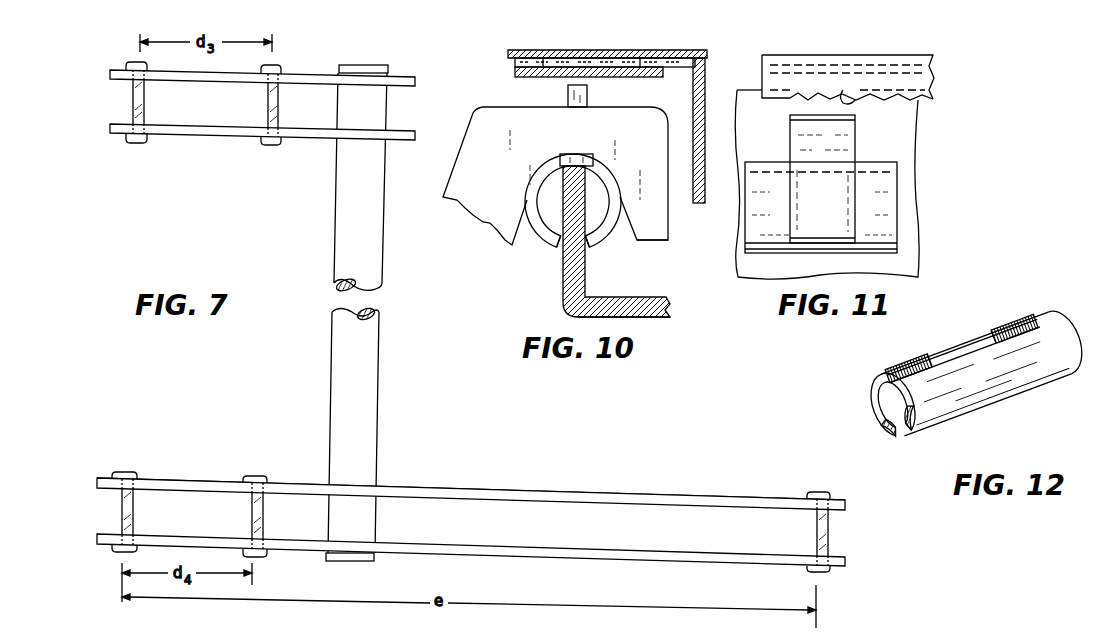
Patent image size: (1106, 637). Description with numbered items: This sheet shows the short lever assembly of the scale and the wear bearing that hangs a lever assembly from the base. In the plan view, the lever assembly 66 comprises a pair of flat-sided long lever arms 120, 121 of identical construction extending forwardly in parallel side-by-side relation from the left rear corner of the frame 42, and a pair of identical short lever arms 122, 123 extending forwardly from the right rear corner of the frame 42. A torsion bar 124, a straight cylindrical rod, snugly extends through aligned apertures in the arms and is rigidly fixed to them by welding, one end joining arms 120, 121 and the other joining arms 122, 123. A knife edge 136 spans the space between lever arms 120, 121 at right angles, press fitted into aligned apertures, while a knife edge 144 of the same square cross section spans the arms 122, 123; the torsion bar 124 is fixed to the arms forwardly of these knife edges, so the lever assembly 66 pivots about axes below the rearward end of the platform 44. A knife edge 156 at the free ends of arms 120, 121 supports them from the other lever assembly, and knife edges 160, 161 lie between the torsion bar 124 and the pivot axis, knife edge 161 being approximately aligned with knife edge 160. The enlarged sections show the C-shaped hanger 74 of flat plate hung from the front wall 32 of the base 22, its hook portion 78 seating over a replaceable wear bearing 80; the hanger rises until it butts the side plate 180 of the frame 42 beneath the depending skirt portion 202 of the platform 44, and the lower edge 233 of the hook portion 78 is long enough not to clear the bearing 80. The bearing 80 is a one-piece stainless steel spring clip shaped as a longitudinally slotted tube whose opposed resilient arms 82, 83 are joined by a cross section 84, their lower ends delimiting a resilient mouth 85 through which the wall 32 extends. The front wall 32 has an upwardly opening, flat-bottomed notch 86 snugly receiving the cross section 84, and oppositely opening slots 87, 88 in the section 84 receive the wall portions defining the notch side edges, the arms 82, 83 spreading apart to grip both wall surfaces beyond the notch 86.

In FIG. 10, the base 22 is at (655, 322).
In FIG. 10, the front wall 32 is at (575, 277).
In FIG. 11, the front wall 32 is at (912, 124).
In FIG. 10, the frame 42 is at (540, 53).
In FIG. 10, the platform 44 is at (660, 51).
In FIG. 11, the platform 44 is at (915, 52).
In FIG. 7, the lever assembly 66 is at (645, 488).
In FIG. 10, the hanger 74 is at (484, 105).
In FIG. 11, the hanger 74 is at (821, 110).
In FIG. 10, the hook portion 78 is at (645, 122).
In FIG. 11, the hook portion 78 is at (831, 208).
In FIG. 10, the wear bearing 80 is at (528, 240).
In FIG. 11, the wear bearing 80 is at (903, 204).
In FIG. 12, the wear bearing 80 is at (1036, 386).
In FIG. 10, the arm 82 is at (548, 241).
In FIG. 12, the arm 82 is at (872, 426).
In FIG. 10, the arm 83 is at (596, 241).
In FIG. 11, the arm 83 is at (888, 242).
In FIG. 12, the arm 83 is at (926, 434).
In FIG. 10, the cross section 84 is at (583, 155).
In FIG. 12, the cross section 84 is at (973, 352).
In FIG. 12, the mouth 85 is at (906, 440).
In FIG. 11, the notch 86 is at (848, 94).
In FIG. 12, the slot 87 is at (900, 370).
In FIG. 12, the slot 88 is at (1040, 316).
In FIG. 7, the long lever arm 120 is at (531, 553).
In FIG. 7, the long lever arm 121 is at (450, 487).
In FIG. 7, the short lever arm 122 is at (222, 137).
In FIG. 7, the short lever arm 123 is at (183, 78).
In FIG. 7, the torsion bar 124 is at (375, 250).
In FIG. 7, the knife edge 136 is at (115, 503).
In FIG. 7, the knife edge 144 is at (128, 98).
In FIG. 7, the knife edge 156 is at (830, 531).
In FIG. 7, the knife edge 160 is at (264, 512).
In FIG. 7, the knife edge 161 is at (281, 104).
In FIG. 10, the side plate 180 is at (578, 62).
In FIG. 11, the side plate 180 is at (860, 60).
In FIG. 10, the skirt portion 202 is at (705, 88).
In FIG. 11, the skirt portion 202 is at (925, 84).
In FIG. 10, the lower edge 233 is at (650, 240).